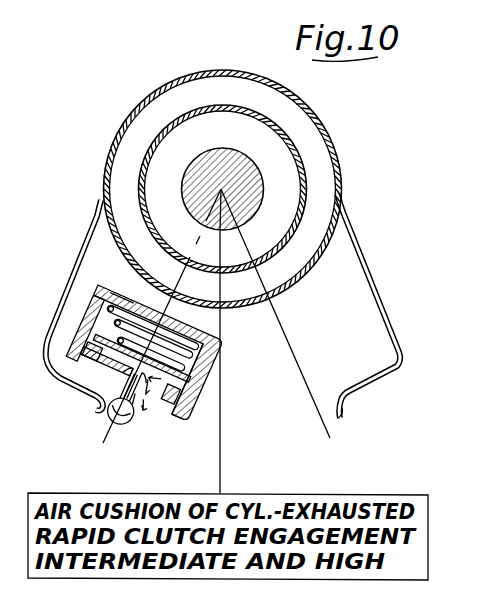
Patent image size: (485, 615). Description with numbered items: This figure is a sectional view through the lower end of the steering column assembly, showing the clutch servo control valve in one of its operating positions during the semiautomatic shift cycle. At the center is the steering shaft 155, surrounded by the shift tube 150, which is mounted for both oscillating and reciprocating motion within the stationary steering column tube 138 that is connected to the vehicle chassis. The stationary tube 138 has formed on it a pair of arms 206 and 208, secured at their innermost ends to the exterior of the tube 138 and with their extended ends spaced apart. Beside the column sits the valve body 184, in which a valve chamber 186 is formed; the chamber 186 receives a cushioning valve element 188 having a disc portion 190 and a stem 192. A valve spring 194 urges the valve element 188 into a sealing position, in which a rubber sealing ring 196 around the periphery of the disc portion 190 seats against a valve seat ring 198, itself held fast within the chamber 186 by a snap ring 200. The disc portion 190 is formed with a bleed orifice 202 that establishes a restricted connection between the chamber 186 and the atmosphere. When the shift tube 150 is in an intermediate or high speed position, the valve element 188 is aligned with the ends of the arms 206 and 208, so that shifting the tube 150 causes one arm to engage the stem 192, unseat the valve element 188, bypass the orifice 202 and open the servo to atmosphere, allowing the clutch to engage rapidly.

The steering column tube 138 is at (202, 156).
The shift tube 150 is at (140, 179).
The steering shaft 155 is at (112, 146).
The valve body 184 is at (97, 288).
The valve chamber 186 is at (118, 292).
The cushioning valve element 188 is at (130, 377).
The disc portion 190 is at (95, 330).
The stem 192 is at (125, 424).
The valve spring 194 is at (214, 331).
The sealing ring 196 is at (92, 347).
The valve seat ring 198 is at (195, 402).
The snap ring 200 is at (185, 424).
The bleed orifice 202 is at (205, 365).
The arm 206 is at (340, 392).
The arm 208 is at (100, 405).